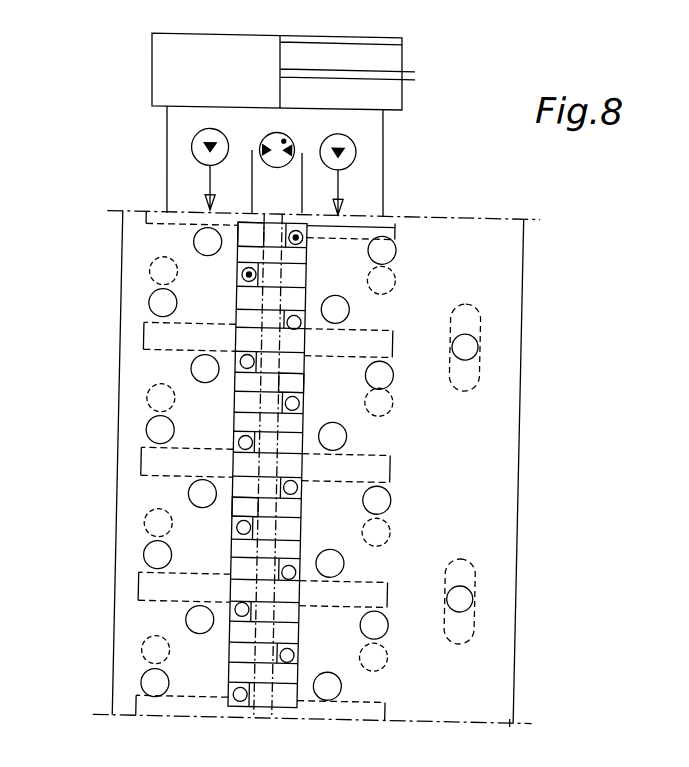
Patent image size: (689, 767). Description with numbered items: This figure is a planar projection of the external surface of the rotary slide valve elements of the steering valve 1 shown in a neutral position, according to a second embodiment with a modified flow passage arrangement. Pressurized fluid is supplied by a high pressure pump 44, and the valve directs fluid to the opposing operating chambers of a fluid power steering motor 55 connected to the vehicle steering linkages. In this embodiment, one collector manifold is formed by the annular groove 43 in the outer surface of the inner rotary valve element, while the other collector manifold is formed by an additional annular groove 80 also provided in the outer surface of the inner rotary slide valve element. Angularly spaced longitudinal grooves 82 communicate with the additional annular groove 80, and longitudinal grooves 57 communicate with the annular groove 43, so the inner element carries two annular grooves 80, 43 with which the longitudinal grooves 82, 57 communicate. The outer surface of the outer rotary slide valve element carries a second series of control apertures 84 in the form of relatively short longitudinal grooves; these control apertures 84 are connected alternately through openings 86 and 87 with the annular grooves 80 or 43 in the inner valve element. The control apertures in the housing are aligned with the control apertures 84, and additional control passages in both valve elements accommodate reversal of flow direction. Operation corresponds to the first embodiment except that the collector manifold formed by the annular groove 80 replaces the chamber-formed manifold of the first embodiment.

The press apparatus 1 is at (282, 138).
The annular groove 43 is at (288, 385).
The high pressure pump 44 is at (349, 150).
The fluid power steering motor 55 is at (165, 77).
The longitudinal grooves 57 is at (365, 470).
The additional annular groove 80 is at (248, 508).
The longitudinal grooves 82 is at (160, 467).
The second series of control apertures 84 is at (271, 275).
The openings 86 is at (246, 276).
The openings 87 is at (391, 240).